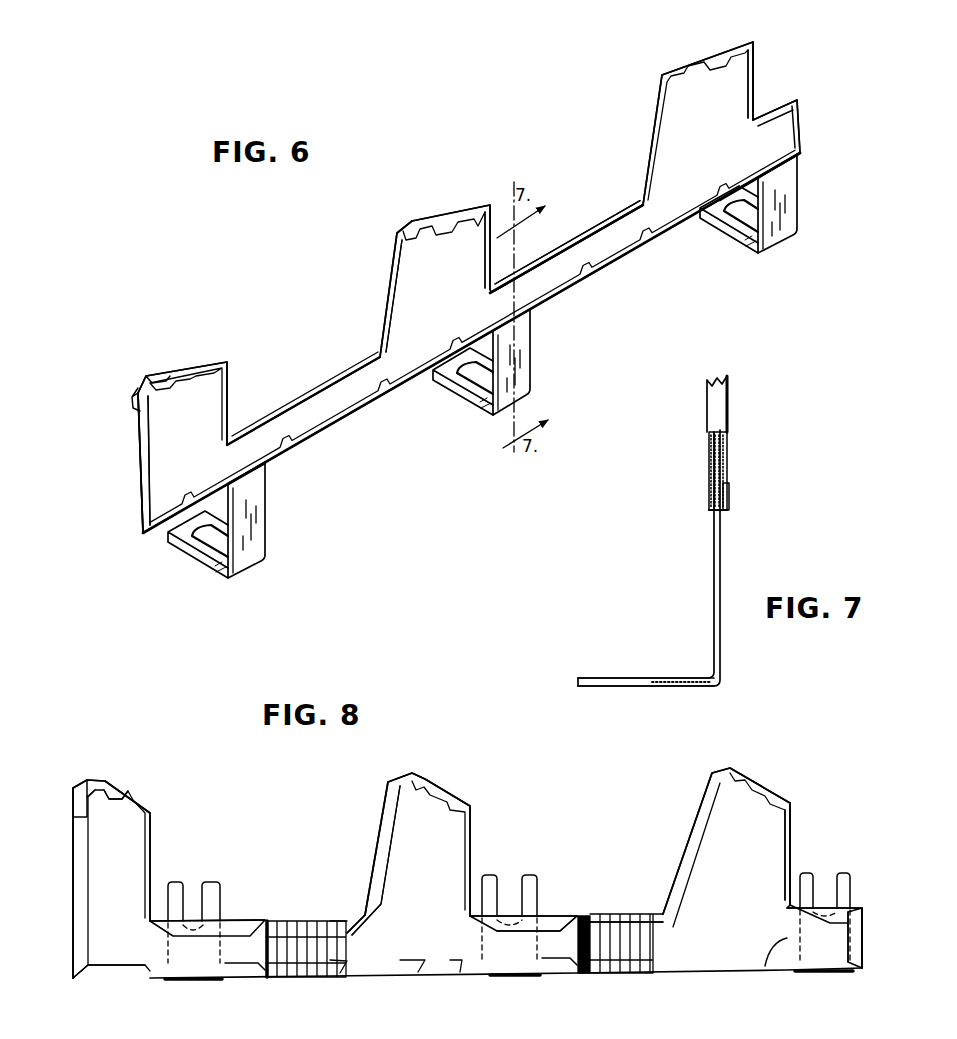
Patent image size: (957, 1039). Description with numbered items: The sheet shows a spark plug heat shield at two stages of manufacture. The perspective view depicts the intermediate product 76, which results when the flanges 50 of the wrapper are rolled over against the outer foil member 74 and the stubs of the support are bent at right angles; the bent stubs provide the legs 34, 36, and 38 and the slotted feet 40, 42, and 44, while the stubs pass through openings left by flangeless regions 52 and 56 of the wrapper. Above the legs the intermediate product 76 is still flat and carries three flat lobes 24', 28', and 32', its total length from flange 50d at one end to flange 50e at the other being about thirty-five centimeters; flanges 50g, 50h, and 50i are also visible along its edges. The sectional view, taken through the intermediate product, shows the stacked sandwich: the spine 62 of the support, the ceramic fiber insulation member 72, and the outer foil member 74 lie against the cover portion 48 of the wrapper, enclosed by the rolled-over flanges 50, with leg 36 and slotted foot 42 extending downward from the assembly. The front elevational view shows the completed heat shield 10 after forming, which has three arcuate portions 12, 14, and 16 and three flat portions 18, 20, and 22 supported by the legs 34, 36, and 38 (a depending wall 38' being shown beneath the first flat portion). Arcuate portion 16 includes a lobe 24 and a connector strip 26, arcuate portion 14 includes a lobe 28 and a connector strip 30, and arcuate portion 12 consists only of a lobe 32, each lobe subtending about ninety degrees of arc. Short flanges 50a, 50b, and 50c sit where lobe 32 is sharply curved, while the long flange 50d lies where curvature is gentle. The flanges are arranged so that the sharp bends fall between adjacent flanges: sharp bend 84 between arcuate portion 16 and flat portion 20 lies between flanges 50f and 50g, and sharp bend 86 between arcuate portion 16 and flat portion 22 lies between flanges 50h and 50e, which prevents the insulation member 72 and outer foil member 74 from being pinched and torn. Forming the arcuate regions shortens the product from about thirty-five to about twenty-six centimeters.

In FIG. 8, the spark plug heat shield 10 is at (495, 745).
In FIG. 8, the arcuate portion 12 is at (178, 813).
In FIG. 8, the arcuate portion 14 is at (366, 807).
In FIG. 8, the arcuate portion 16 is at (679, 808).
In FIG. 8, the flat portion 18 is at (246, 975).
In FIG. 8, the flat portion 20 is at (563, 966).
In FIG. 8, the flat portion 22 is at (842, 972).
In FIG. 8, the lobe 24 is at (747, 847).
In FIG. 6, the flat lobe 24' is at (698, 112).
In FIG. 8, the connector strip 26 is at (631, 969).
In FIG. 8, the lobe 28 is at (425, 873).
In FIG. 6, the flat lobe 28' is at (418, 281).
In FIG. 8, the connector strip 30 is at (313, 926).
In FIG. 8, the lobe 32 is at (128, 879).
In FIG. 6, the flat lobe 32' is at (202, 447).
In FIG. 6, the leg 34 is at (793, 212).
In FIG. 8, the leg 34 is at (810, 976).
In FIG. 6, the leg 36 is at (528, 366).
In FIG. 7, the leg 36 is at (715, 611).
In FIG. 8, the leg 36 is at (515, 973).
In FIG. 6, the leg 38 is at (266, 520).
In FIG. 8, the first depending wall (modified) 38' is at (193, 991).
In FIG. 6, the slotted foot 40 is at (734, 233).
In FIG. 8, the slotted foot 40 is at (848, 886).
In FIG. 6, the slotted foot 42 is at (464, 397).
In FIG. 7, the slotted foot 42 is at (628, 677).
In FIG. 8, the slotted foot 42 is at (495, 888).
In FIG. 6, the slotted foot 44 is at (197, 553).
In FIG. 8, the slotted foot 44 is at (214, 888).
In FIG. 7, the cover portion 48 is at (712, 468).
In FIG. 6, the flanges 50 is at (343, 382).
In FIG. 7, the flanges 50 is at (730, 444).
In FIG. 6, the flange 50a is at (138, 410).
In FIG. 8, the flange 50a is at (73, 806).
In FIG. 6, the flange 50b is at (146, 383).
In FIG. 8, the flange 50b is at (86, 785).
In FIG. 8, the flange 50c is at (106, 785).
In FIG. 6, the flange 50d is at (146, 476).
In FIG. 8, the flange 50d is at (79, 966).
In FIG. 6, the flange 50e is at (800, 126).
In FIG. 8, the flange 50e is at (855, 944).
In FIG. 8, the flange 50f is at (548, 913).
In FIG. 6, the flange 50g is at (603, 232).
In FIG. 8, the flange 50g is at (641, 914).
In FIG. 6, the flange 50h is at (752, 80).
In FIG. 8, the flange 50h is at (792, 846).
In FIG. 6, the lip segment 50i is at (778, 112).
In FIG. 6, the flangeless region 52 is at (260, 484).
In FIG. 6, the flangeless region 56 is at (784, 165).
In FIG. 7, the spine 62 is at (713, 491).
In FIG. 7, the ceramic fiber insulation member 72 is at (728, 516).
In FIG. 6, the outer foil member 74 is at (434, 301).
In FIG. 7, the outer foil member 74 is at (728, 468).
In FIG. 8, the outer foil member 74 is at (409, 908).
In FIG. 6, the intermediate product 76 is at (312, 282).
In FIG. 8, the sharp bend 84 is at (582, 915).
In FIG. 8, the sharp bend 86 is at (788, 951).